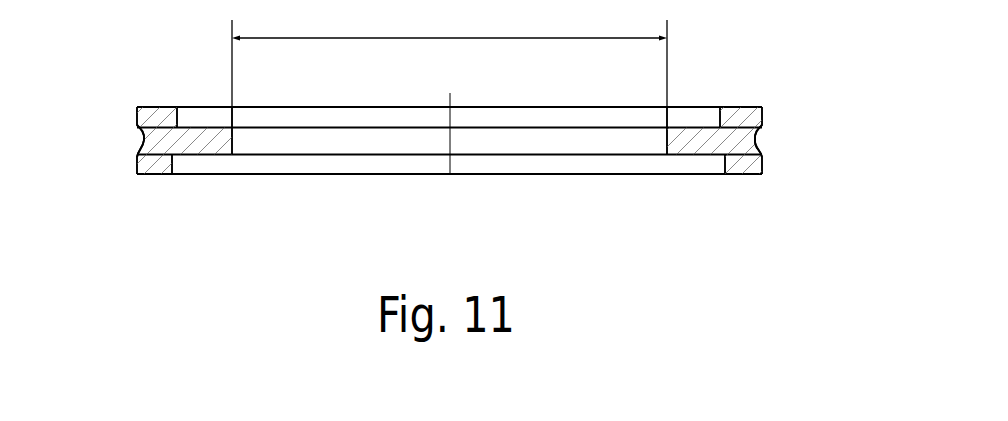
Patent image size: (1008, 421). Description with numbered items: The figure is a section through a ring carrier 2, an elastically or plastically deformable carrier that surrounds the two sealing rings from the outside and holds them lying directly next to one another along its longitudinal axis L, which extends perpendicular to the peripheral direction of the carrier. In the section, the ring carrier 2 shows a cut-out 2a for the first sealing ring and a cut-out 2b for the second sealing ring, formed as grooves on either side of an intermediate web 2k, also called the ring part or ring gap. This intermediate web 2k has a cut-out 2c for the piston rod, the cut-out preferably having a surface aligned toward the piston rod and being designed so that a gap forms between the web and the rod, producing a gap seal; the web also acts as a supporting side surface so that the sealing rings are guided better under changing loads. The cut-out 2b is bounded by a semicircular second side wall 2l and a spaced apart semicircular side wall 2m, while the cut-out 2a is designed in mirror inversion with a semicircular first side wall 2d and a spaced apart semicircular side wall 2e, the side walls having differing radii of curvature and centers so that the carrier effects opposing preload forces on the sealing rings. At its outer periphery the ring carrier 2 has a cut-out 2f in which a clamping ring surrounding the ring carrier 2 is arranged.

The ring carrier 2 is at (748, 120).
The cut-out for the first sealing ring 2a is at (270, 163).
The cut-out for the second sealing ring 2b is at (213, 108).
The cut-out for the piston rod 2c is at (331, 145).
The first side wall 2d is at (720, 165).
The side wall 2e is at (177, 164).
The cut-out 2f is at (131, 140).
The intermediate web 2k is at (207, 142).
The second side wall 2l is at (180, 111).
The side wall 2m is at (713, 118).
The longitudinal axis L is at (451, 108).